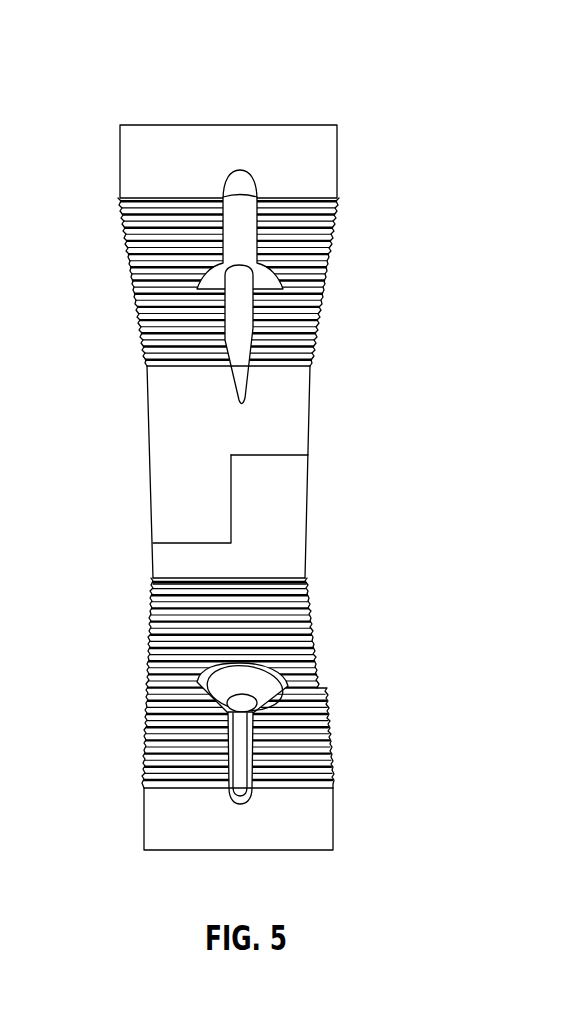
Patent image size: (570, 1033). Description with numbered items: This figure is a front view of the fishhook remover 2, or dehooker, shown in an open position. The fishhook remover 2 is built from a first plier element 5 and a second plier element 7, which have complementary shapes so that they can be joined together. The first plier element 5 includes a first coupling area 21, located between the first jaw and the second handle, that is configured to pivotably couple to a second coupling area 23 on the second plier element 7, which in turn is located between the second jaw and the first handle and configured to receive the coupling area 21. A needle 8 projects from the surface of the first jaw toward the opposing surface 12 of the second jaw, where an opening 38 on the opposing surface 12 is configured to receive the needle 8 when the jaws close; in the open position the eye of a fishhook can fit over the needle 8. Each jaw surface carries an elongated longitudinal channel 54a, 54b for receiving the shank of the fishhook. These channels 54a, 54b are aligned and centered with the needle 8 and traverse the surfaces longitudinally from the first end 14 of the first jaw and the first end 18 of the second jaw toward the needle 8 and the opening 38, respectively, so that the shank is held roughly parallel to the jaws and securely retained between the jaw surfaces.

The fishhook remover 2 is at (475, 61).
The first end of the first jaw 14 is at (232, 148).
The first elongated longitudinal channel 54a is at (240, 185).
The needle 8 is at (240, 311).
The first plier element 5 is at (163, 425).
The first coupling area 21 is at (178, 483).
The second coupling area 23 is at (287, 502).
The second plier element 7 is at (163, 558).
The opposing surface of the second jaw 12 is at (168, 750).
The opening 38 is at (242, 704).
The second elongated longitudinal channel 54b is at (243, 762).
The first end of the second jaw 18 is at (163, 826).